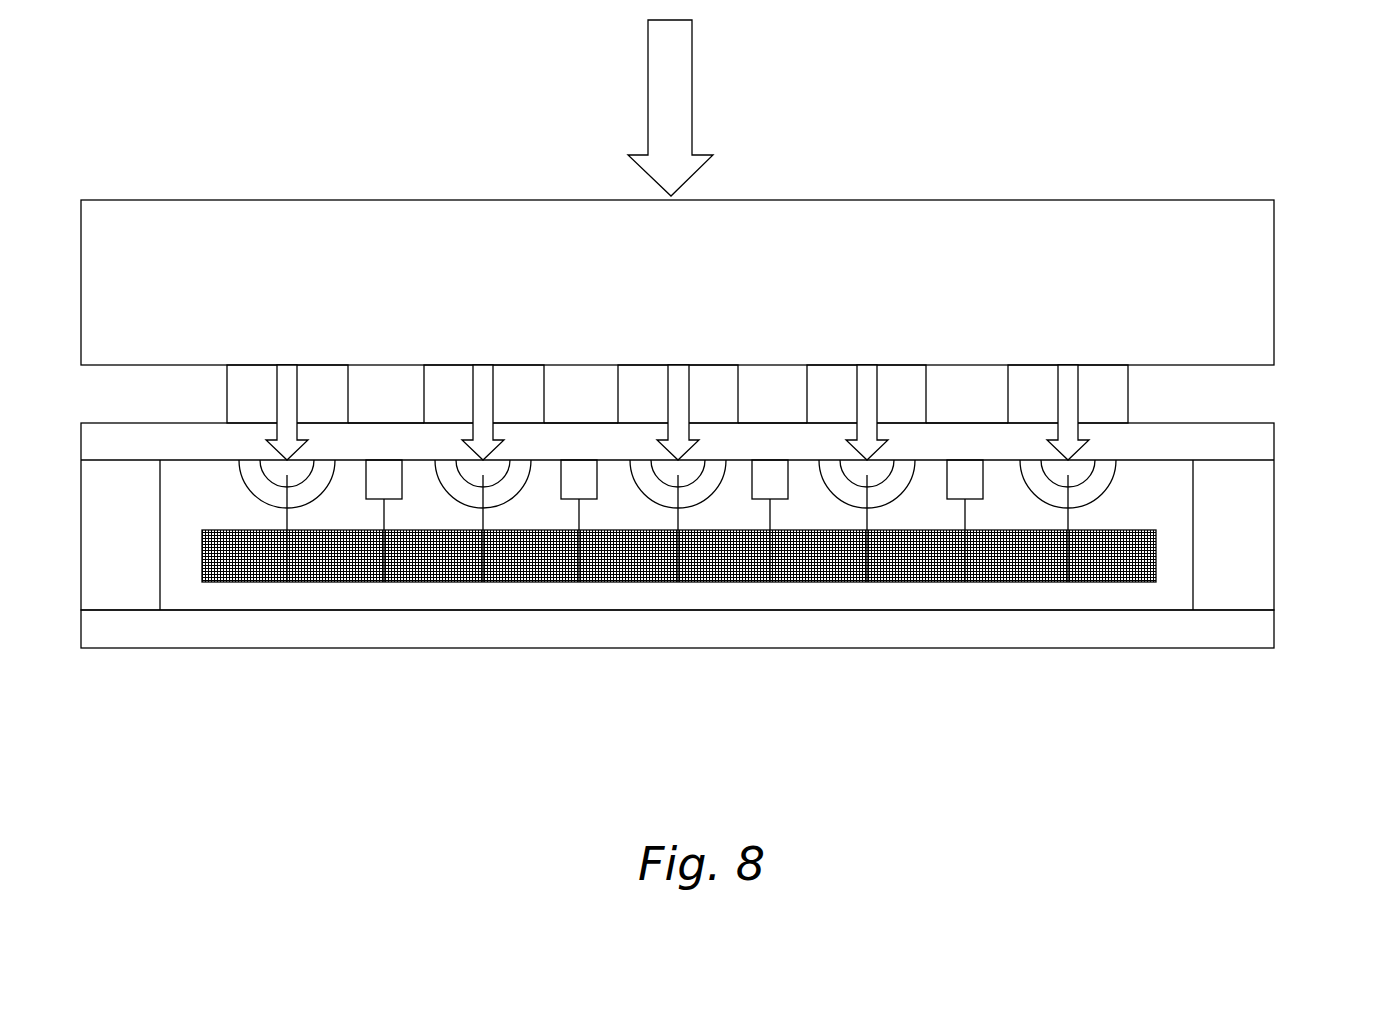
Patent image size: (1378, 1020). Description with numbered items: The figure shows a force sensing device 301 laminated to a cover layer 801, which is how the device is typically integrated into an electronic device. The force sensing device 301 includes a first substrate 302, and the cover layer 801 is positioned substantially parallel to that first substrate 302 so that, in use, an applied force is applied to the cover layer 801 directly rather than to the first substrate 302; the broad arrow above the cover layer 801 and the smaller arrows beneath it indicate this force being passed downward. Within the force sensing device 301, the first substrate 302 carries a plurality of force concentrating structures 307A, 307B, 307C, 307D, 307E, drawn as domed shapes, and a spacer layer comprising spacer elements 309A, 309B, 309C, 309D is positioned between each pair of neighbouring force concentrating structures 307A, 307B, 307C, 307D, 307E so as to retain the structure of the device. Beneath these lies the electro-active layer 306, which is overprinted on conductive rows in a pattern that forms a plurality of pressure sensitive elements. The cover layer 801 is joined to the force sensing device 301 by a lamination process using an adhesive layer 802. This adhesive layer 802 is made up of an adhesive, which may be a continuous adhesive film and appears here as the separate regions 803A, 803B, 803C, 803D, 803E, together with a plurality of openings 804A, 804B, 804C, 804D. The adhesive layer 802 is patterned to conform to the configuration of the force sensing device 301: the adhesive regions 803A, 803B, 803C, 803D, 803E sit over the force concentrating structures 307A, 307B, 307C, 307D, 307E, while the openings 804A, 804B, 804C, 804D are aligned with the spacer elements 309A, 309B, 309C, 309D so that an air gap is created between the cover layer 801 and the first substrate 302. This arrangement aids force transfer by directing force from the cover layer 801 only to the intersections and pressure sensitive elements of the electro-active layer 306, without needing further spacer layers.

The cover layer 801 is at (1267, 281).
The adhesive layer 802 is at (1122, 407).
The adhesive 803A is at (243, 397).
The adhesive 803B is at (466, 397).
The adhesive 803C is at (705, 397).
The adhesive 803D is at (900, 397).
The adhesive 803E is at (1108, 397).
The opening 804A is at (359, 397).
The opening 804B is at (580, 397).
The opening 804C is at (790, 397).
The opening 804D is at (985, 397).
The first substrate 302 is at (1267, 441).
The force sensing device 301 is at (1267, 632).
The electro-active layer 306 is at (1095, 582).
The force concentrating structure 307A is at (278, 582).
The force concentrating structure 307B is at (474, 582).
The force concentrating structure 307C is at (669, 582).
The force concentrating structure 307D is at (858, 582).
The force concentrating structure 307E is at (1059, 582).
The spacer element 309A is at (375, 582).
The spacer element 309B is at (570, 582).
The spacer element 309C is at (761, 582).
The spacer element 309D is at (956, 582).